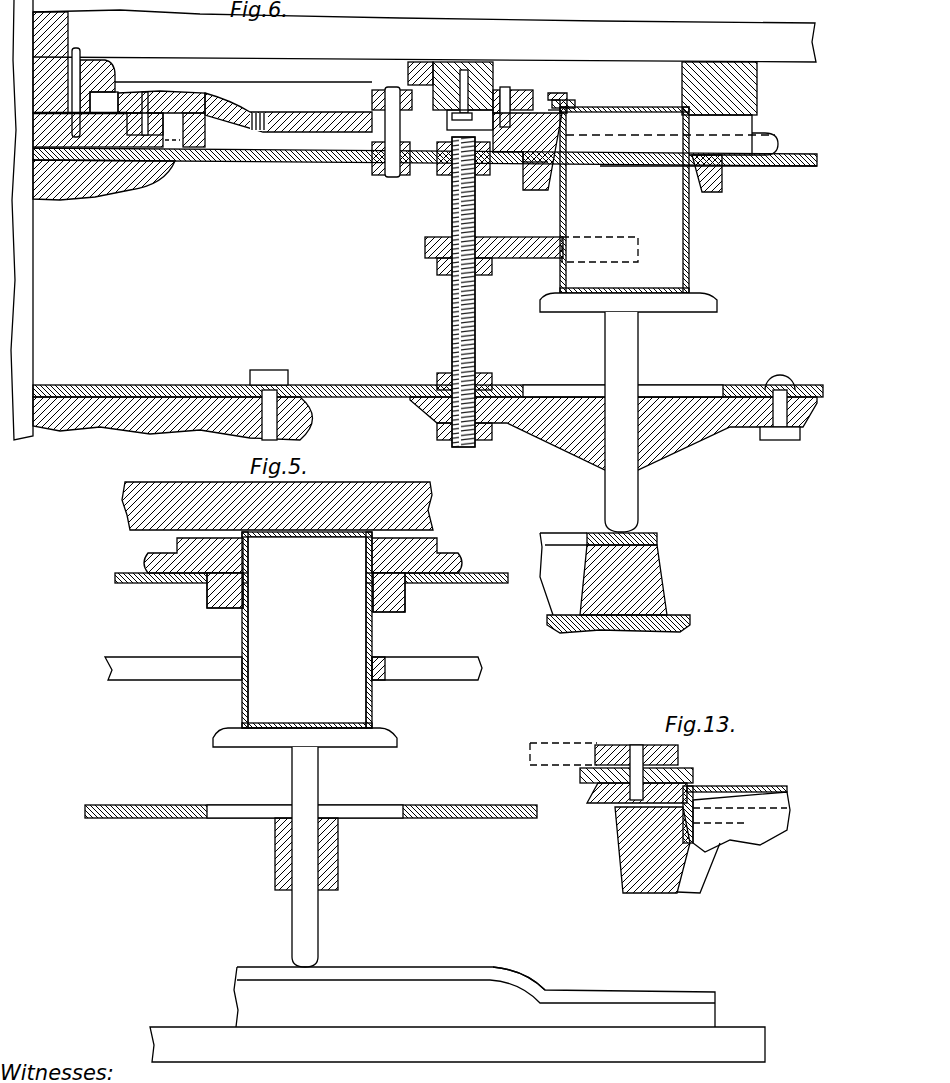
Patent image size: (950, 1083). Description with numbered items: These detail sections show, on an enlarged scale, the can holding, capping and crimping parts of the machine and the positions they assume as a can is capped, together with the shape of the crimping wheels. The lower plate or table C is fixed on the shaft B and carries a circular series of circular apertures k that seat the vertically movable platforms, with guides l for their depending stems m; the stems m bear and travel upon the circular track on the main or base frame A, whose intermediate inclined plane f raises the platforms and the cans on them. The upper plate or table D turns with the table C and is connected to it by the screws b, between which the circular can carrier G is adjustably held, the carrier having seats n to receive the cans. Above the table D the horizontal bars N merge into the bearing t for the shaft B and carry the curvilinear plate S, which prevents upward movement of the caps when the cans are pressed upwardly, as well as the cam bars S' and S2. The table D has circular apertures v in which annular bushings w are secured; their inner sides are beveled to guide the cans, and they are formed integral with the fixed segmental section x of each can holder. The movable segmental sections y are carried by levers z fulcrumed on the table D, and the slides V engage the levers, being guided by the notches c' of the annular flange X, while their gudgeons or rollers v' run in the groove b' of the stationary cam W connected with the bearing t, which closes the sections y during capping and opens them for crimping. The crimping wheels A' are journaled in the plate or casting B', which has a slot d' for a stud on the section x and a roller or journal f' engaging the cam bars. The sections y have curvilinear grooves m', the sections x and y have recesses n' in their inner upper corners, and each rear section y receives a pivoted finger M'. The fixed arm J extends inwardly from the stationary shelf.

In FIG. 6, the shaft B is at (38, 220).
In FIG. 6, the horizontal bars N is at (424, 36).
In FIG. 6, the bearing t is at (62, 34).
In FIG. 6, the stationary cam W is at (110, 125).
In FIG. 6, the groove b' is at (162, 148).
In FIG. 6, the notches c' is at (192, 99).
In FIG. 6, the slides V is at (301, 116).
In FIG. 6, the gudgeons or rollers v' is at (194, 98).
In FIG. 6, the annular flange X is at (205, 152).
In FIG. 6, the levers z is at (318, 137).
In FIG. 6, the upper plate or table D is at (800, 166).
In FIG. 5, the upper plate or table D is at (487, 583).
In FIG. 6, the cam bar S' is at (385, 104).
In FIG. 6, the roller or journal f' is at (463, 79).
In FIG. 6, the cam bar S2 is at (517, 63).
In FIG. 6, the annular bushings w is at (533, 187).
In FIG. 5, the annular bushings w is at (398, 607).
In FIG. 13, the annular bushings w is at (657, 875).
In FIG. 6, the fixed segmental section x is at (522, 157).
In FIG. 6, the circular apertures v is at (525, 196).
In FIG. 5, the circular apertures v is at (206, 595).
In FIG. 6, the plate or casting B' is at (548, 88).
In FIG. 13, the plate or casting B' is at (656, 770).
In FIG. 6, the crimping wheels A' is at (584, 92).
In FIG. 13, the crimping wheels A' is at (667, 784).
In FIG. 6, the slot d' is at (586, 71).
In FIG. 6, the seats n is at (600, 249).
In FIG. 6, the block T' is at (741, 88).
In FIG. 6, the movable segmental sections y is at (737, 125).
In FIG. 5, the movable segmental sections y is at (178, 545).
In FIG. 6, the circular can carrier G is at (528, 258).
In FIG. 5, the circular can carrier G is at (430, 665).
In FIG. 6, the lower plate or table C is at (150, 385).
In FIG. 5, the lower plate or table C is at (446, 808).
In FIG. 6, the circular apertures k is at (700, 386).
In FIG. 5, the circular apertures k is at (228, 805).
In FIG. 6, the guides l is at (690, 447).
In FIG. 6, the screws b is at (453, 292).
In FIG. 6, the flange head F' is at (628, 321).
In FIG. 5, the flange head F' is at (321, 733).
In FIG. 6, the depending stems m is at (640, 422).
In FIG. 5, the depending stems m is at (313, 857).
In FIG. 6, the fixed arm J is at (660, 535).
In FIG. 6, the die block E' is at (622, 574).
In FIG. 5, the die block E' is at (474, 997).
In FIG. 6, the main or base frame A is at (630, 617).
In FIG. 5, the main or base frame A is at (457, 1044).
In FIG. 5, the curvilinear plate S is at (292, 505).
In FIG. 5, the curvilinear grooves m' is at (361, 527).
In FIG. 5, the pivoted finger M' is at (307, 630).
In FIG. 5, the guide block Z is at (340, 858).
In FIG. 5, the inclined plane f is at (519, 962).
In FIG. 13, the recesses n' is at (636, 850).